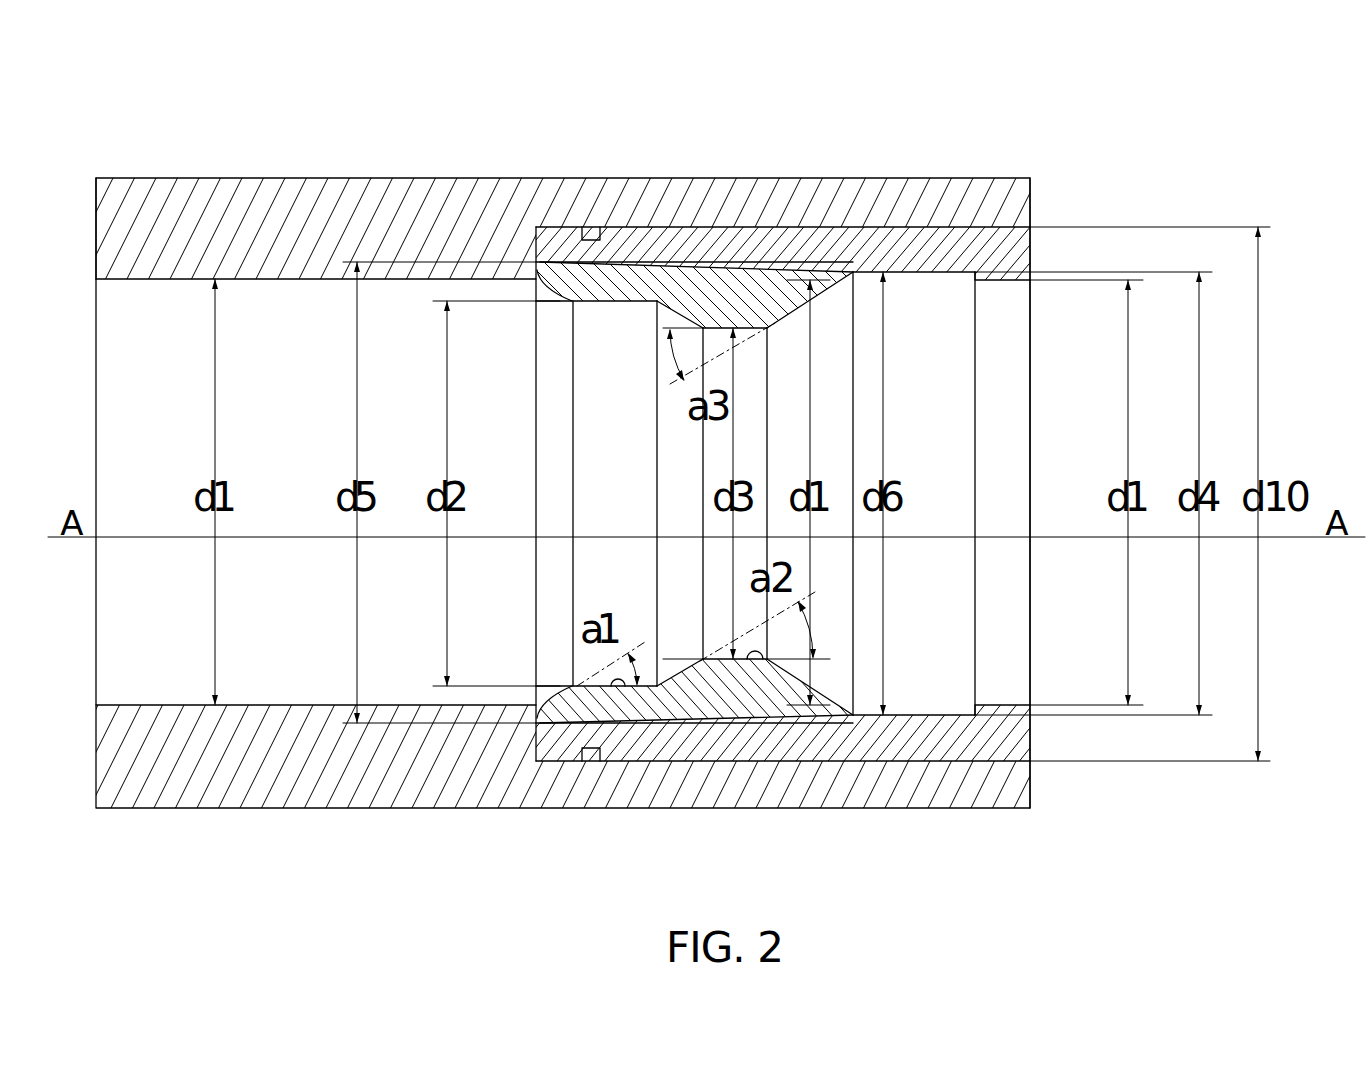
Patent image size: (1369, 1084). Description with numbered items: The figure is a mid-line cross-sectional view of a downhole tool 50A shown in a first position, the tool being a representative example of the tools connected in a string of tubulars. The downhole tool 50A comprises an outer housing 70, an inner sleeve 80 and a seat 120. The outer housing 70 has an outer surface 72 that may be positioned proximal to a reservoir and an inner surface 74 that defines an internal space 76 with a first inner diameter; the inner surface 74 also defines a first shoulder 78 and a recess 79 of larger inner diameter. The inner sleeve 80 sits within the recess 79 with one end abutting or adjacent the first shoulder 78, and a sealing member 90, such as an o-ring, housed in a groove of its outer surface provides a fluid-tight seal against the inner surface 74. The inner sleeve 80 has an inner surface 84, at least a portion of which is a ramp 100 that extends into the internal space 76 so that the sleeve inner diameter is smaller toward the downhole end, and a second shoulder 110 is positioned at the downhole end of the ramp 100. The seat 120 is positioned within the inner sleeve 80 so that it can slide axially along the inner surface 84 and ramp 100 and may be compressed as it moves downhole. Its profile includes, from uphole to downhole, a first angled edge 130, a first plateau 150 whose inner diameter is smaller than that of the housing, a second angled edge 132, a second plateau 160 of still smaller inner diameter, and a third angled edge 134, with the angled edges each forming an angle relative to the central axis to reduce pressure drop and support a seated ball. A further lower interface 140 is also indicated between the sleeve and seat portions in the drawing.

The downhole tool 50A is at (970, 182).
The outer housing 70 is at (784, 476).
The outer surface 72 is at (335, 177).
The inner surface 74 is at (152, 281).
The internal space 76 is at (167, 421).
The first shoulder 78 is at (535, 290).
The recess 79 is at (673, 232).
The inner sleeve 80 is at (1033, 250).
The inner surface 84 is at (920, 293).
The sealing member 90 is at (587, 229).
The ramp 100 is at (866, 275).
The second shoulder 110 is at (958, 265).
The seat 120 is at (595, 730).
The first angled edge 130 is at (545, 702).
The second angled edge 132 is at (690, 666).
The third angled edge 134 is at (815, 690).
The lower tapered interface 140 is at (672, 719).
The first plateau 150 is at (620, 682).
The second plateau 160 is at (756, 662).